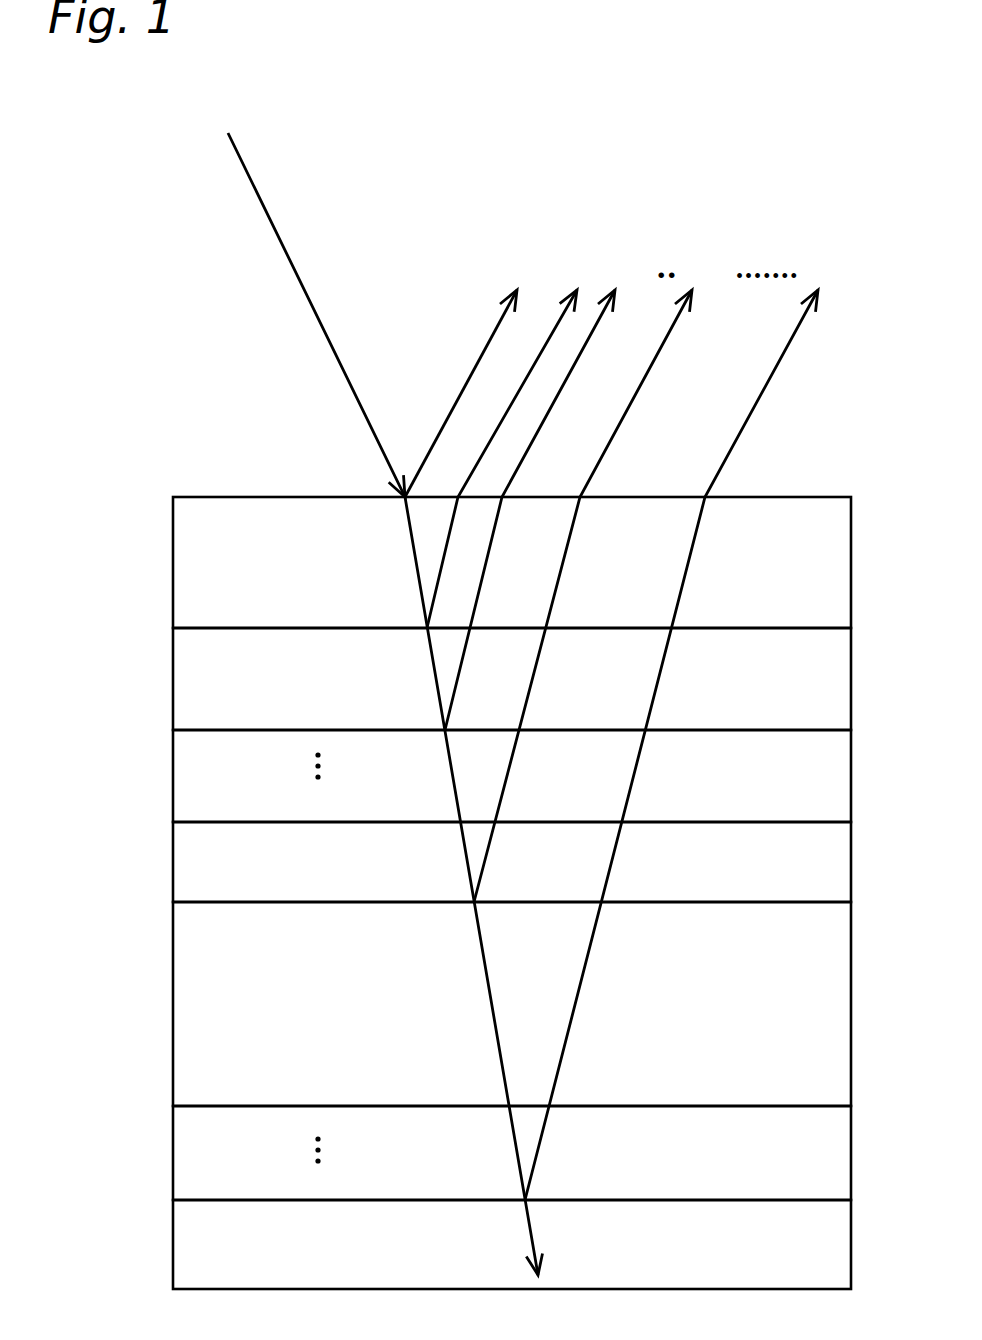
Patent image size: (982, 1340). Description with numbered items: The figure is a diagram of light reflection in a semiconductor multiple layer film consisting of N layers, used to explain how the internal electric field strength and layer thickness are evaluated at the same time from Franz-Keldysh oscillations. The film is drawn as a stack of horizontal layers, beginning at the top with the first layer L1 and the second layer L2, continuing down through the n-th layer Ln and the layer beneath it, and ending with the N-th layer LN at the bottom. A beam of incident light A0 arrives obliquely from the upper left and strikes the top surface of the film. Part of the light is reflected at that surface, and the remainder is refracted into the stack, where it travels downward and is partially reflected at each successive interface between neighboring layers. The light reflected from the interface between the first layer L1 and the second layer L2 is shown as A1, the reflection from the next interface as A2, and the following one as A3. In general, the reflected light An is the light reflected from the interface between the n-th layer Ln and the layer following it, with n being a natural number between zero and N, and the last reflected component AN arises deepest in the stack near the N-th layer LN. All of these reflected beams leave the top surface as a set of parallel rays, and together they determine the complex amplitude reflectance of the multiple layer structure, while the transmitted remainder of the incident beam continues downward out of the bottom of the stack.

The incident light A0 is at (385, 704).
The reflected light from first interface A1 is at (468, 373).
The reflected light from second interface A2 is at (508, 439).
The reflected light from third interface A3 is at (545, 490).
The reflected light from n-th interface An is at (598, 576).
The reflected light from N-th layer AN is at (687, 725).
The first layer L1 is at (512, 562).
The second layer L2 is at (512, 679).
The n-th layer Ln is at (512, 862).
The N-th layer LN is at (512, 1244).